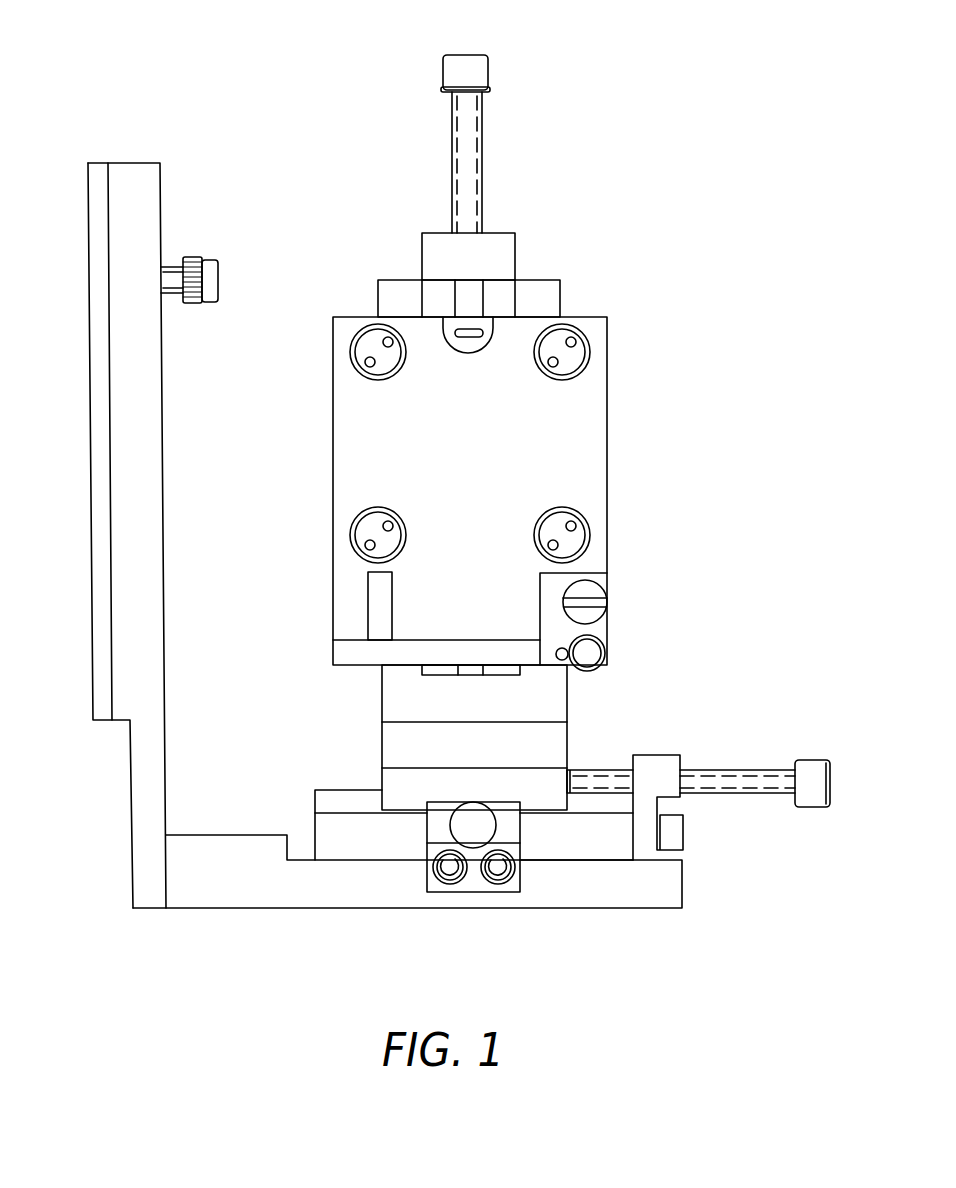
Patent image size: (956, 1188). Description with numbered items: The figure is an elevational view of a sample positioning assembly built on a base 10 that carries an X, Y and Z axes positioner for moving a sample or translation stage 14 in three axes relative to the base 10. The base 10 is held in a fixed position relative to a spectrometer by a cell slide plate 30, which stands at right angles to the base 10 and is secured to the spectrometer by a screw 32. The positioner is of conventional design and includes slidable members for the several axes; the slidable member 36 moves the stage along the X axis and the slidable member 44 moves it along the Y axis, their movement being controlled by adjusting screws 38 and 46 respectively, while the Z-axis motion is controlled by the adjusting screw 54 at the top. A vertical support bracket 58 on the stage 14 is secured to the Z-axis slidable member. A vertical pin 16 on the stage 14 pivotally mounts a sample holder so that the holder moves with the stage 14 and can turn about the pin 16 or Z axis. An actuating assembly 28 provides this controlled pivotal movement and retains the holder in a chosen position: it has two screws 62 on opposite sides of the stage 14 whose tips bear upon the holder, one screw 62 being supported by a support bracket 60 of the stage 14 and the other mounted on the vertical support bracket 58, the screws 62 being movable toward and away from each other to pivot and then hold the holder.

The base 10 is at (288, 926).
The sample or translation stage 14 is at (348, 650).
The vertical pin 16 is at (352, 603).
The actuating assembly 28 is at (632, 565).
The cell slide plate 30 is at (122, 163).
The screw 32 is at (174, 268).
The slidable member 36 is at (315, 790).
The adjusting screw 38 is at (463, 818).
The slidable member 44 is at (400, 782).
The adjusting screw 46 is at (827, 758).
The adjusting screw 54 is at (476, 55).
The vertical support bracket 58 is at (607, 398).
The support bracket 60 is at (548, 593).
The screws 62 is at (597, 613).